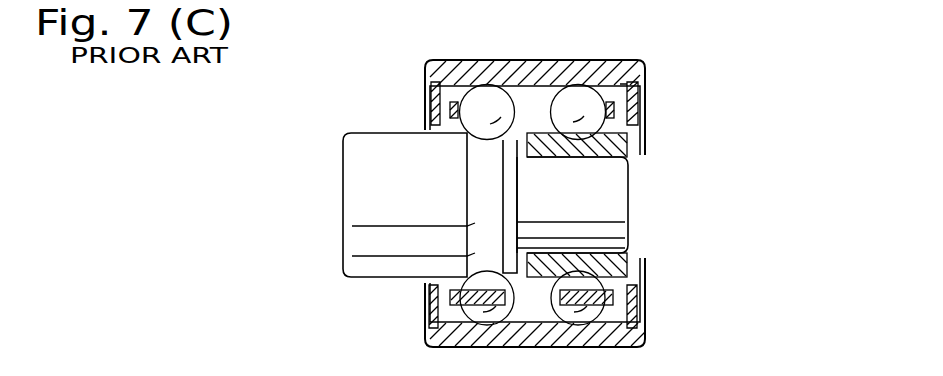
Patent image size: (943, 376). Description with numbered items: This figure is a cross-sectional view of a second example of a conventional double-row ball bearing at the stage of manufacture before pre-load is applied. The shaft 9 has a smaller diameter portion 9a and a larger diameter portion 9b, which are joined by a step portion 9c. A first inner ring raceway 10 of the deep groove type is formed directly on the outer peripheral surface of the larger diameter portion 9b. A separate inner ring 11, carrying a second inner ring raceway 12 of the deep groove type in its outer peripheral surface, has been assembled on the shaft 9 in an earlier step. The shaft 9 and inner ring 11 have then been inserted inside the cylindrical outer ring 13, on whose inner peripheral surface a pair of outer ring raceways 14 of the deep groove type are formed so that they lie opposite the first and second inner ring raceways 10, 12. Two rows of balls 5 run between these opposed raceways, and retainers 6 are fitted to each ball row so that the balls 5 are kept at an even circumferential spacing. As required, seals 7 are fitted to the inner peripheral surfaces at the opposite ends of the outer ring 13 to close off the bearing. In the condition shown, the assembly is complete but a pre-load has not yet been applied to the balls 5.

The balls 5 is at (536, 74).
The retainers 6 is at (455, 102).
The seals 7 is at (640, 97).
The shaft 9 is at (528, 205).
The smaller diameter portion 9a is at (613, 172).
The larger diameter portion 9b is at (407, 150).
The step portion 9c is at (525, 268).
The first inner ring raceway 10 is at (487, 137).
The inner ring 11 is at (618, 252).
The second inner ring raceway 12 is at (642, 59).
The outer ring 13 is at (569, 128).
The outer ring raceways 14 is at (488, 331).